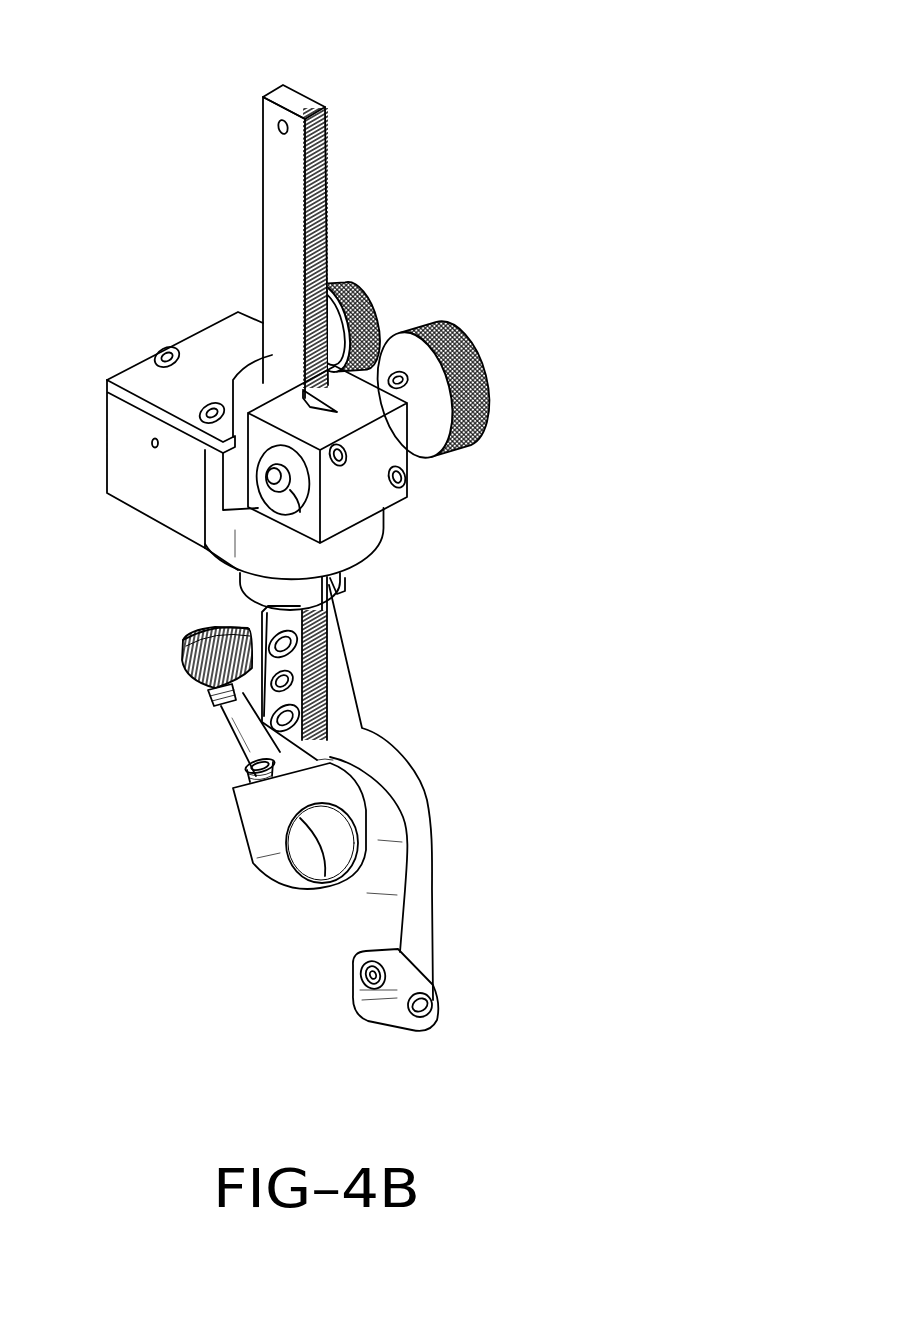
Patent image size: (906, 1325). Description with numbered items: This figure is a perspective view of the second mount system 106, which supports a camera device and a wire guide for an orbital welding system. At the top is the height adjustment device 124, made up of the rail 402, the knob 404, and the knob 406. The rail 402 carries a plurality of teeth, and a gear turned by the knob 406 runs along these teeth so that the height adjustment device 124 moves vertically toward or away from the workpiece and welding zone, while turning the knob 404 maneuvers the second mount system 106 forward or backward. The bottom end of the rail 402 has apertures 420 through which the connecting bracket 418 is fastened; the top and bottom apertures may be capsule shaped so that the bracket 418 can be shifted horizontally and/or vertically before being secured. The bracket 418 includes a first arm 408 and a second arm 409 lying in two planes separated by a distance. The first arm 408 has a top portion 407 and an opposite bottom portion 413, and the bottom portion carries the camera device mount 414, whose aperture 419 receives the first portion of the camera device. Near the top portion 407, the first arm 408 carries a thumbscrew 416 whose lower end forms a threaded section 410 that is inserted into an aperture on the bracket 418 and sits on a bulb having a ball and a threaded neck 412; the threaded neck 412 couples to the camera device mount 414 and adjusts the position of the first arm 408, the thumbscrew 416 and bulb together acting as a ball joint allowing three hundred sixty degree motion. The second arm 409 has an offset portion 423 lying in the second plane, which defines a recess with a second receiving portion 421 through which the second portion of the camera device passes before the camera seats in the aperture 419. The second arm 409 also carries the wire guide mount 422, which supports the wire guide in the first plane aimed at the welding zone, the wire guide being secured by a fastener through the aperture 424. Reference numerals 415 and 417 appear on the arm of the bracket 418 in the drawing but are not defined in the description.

The second mount system 106 is at (435, 125).
The rail 402 is at (282, 193).
The knob 404 is at (350, 300).
The knob 406 is at (458, 343).
The height adjustment device 124 is at (155, 483).
The thumbscrew 416 is at (232, 632).
The first arm 408 is at (187, 651).
The top portion 407 is at (217, 700).
The threaded section 410 is at (247, 698).
The bottom portion 413 is at (247, 768).
The threaded neck 412 is at (257, 768).
The camera device mount 414 is at (245, 828).
The aperture 419 is at (327, 848).
The apertures 420 is at (292, 717).
The curved arm 415 is at (363, 728).
The bracket 418 is at (375, 748).
The offset portion 423 is at (430, 813).
The second receiving portion 421 is at (373, 855).
The arm lower portion 417 is at (431, 964).
The second arm 409 is at (394, 1023).
The aperture 424 is at (373, 977).
The wire guide mount 422 is at (418, 1006).